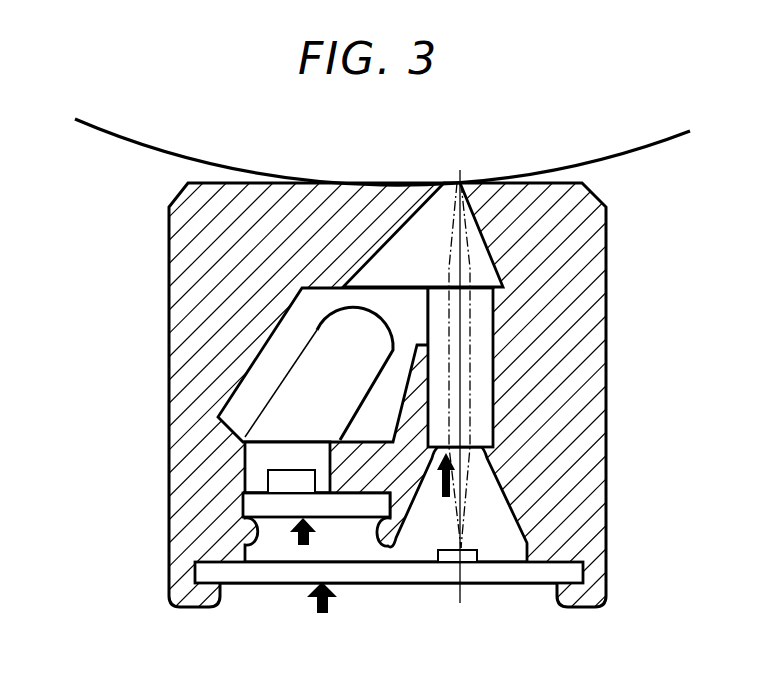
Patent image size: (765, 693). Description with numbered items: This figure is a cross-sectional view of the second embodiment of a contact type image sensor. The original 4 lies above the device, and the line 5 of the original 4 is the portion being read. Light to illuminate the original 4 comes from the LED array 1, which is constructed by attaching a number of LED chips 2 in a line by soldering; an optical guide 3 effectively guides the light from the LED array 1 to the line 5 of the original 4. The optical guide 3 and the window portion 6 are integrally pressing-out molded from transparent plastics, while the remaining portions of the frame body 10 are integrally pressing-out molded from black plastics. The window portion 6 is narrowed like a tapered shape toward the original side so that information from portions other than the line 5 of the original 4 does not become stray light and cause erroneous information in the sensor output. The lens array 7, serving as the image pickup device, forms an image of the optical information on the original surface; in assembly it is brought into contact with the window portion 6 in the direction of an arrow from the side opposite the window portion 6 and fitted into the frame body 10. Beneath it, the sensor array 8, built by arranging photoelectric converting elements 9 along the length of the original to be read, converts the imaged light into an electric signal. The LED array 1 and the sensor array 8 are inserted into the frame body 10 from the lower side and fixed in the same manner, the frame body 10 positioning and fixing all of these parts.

The LED array 1 is at (252, 508).
The LED chips 2 is at (275, 482).
The optical guide 3 is at (330, 338).
The original 4 is at (585, 163).
The line of original 5 is at (466, 176).
The window portion 6 is at (438, 213).
The lens array 7 is at (485, 313).
The sensor array 8 is at (505, 575).
The photoelectric converting elements 9 is at (468, 549).
The frame body 10 is at (562, 358).